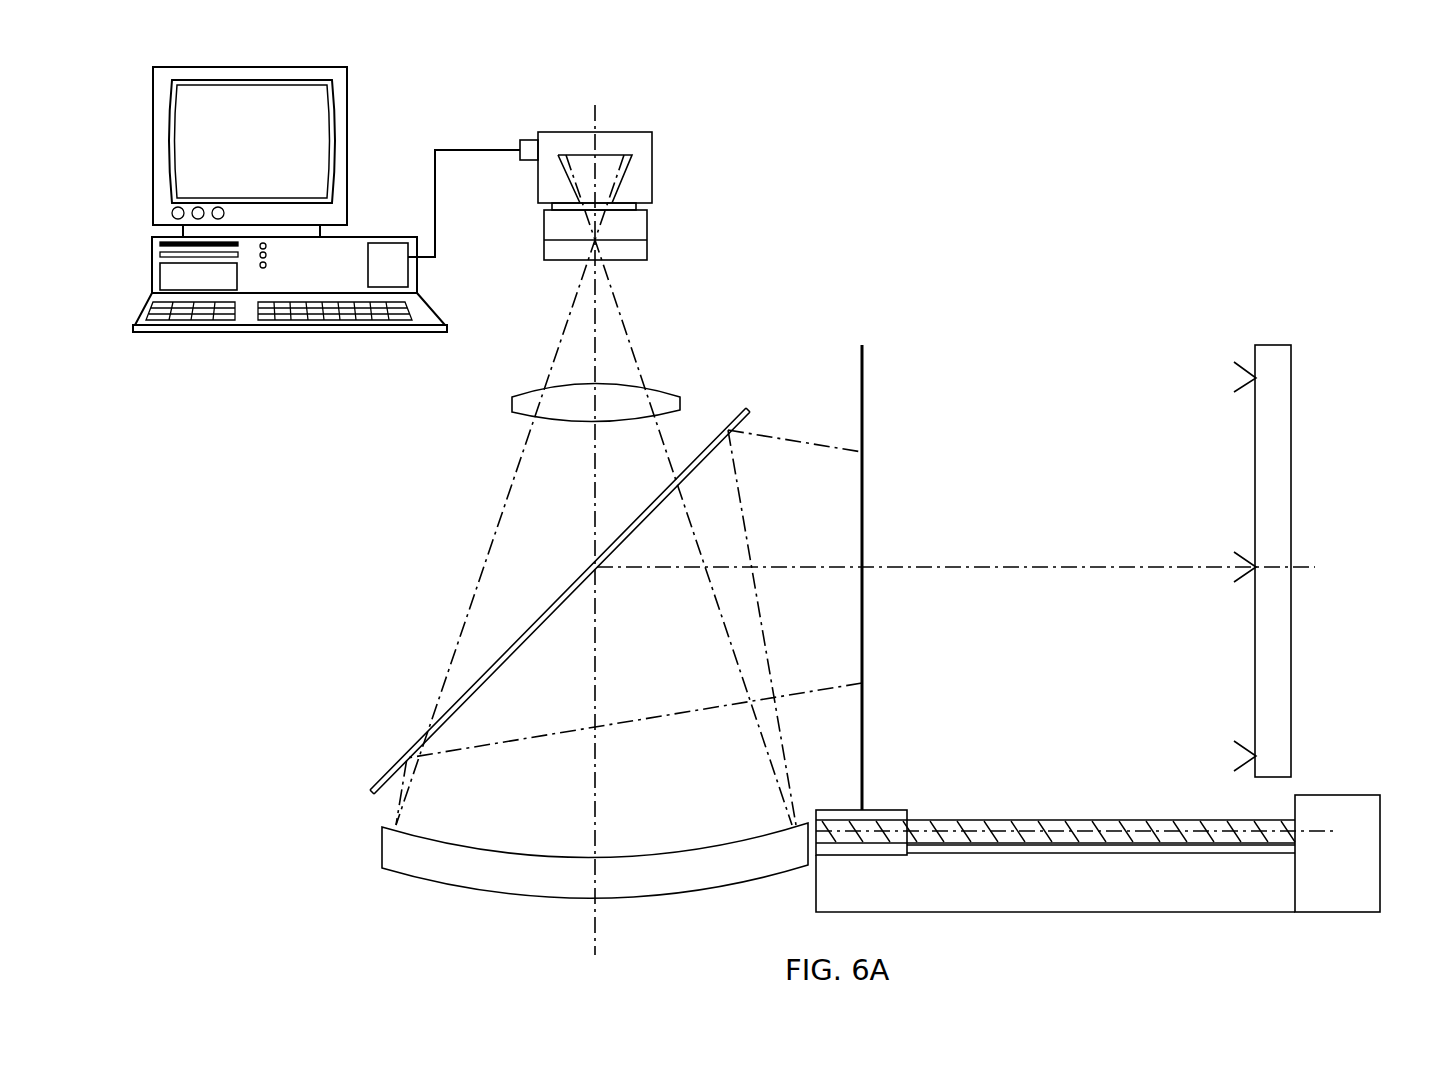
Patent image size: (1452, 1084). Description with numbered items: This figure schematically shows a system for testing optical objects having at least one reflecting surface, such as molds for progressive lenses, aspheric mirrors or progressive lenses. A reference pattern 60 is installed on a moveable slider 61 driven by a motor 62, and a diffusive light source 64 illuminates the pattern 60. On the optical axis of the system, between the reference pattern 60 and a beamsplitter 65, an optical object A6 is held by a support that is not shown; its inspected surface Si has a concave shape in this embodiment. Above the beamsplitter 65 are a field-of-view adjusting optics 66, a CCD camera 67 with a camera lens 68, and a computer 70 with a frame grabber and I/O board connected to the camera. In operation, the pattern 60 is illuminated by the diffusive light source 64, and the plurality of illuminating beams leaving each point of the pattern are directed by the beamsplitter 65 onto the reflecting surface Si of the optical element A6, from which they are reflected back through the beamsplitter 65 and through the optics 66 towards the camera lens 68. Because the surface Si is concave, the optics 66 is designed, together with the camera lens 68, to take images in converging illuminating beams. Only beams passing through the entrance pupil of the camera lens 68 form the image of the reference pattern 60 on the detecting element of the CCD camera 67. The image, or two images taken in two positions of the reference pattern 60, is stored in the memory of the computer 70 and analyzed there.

The computer 70 is at (255, 283).
The CCD camera 67 is at (648, 172).
The camera lens 68 is at (648, 228).
The field-of-view adjusting optics 66 is at (512, 406).
The beamsplitter 65 is at (388, 770).
The reference pattern 60 is at (858, 368).
The diffusive light source 64 is at (1275, 390).
The moveable slider 61 is at (878, 815).
The motor 62 is at (1352, 825).
The optical object A6 is at (395, 850).
The inspected surface Si is at (472, 855).